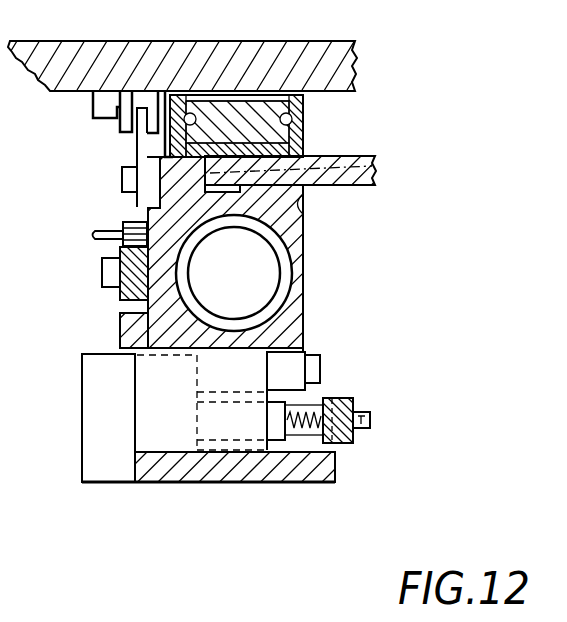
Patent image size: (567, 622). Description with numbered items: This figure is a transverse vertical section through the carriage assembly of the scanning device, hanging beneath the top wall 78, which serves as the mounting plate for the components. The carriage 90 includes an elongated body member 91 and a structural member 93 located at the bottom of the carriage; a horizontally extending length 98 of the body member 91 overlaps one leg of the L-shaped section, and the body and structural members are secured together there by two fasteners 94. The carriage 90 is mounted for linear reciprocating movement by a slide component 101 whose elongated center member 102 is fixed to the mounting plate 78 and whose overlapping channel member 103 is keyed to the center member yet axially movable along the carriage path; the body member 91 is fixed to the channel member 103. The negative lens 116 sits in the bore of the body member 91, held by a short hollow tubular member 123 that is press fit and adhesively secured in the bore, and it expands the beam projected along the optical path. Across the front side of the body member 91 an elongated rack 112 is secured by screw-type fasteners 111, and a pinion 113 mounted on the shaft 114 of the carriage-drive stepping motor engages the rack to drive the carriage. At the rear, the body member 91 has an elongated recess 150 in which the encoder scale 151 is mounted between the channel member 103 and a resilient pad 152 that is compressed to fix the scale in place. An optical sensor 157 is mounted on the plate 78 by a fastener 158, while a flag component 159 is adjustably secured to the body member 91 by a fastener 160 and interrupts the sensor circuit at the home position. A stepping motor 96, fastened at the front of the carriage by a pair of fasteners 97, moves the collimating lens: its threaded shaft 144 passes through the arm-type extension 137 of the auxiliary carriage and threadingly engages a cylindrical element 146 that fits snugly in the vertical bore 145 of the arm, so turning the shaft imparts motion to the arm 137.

The top wall 78 is at (192, 41).
The optical sensor 157 is at (93, 101).
The fastener 158 is at (100, 120).
The flag component 159 is at (136, 155).
The fastener 160 is at (121, 180).
The elongated center member 102 is at (304, 110).
The elongated overlapping channel member 103 is at (292, 132).
The slide component 101 is at (302, 146).
The encoder scale 151 is at (364, 158).
The body member 91 is at (304, 249).
The negative lens 116 is at (292, 300).
The tubular member 123 is at (294, 273).
The elongated recess 150 is at (305, 204).
The resilient pad 152 is at (304, 224).
The horizontally extending length 98 is at (307, 352).
The pinion 113 is at (125, 222).
The shaft 114 is at (93, 237).
The screw-type fasteners 111 is at (102, 272).
The elongated rack 112 is at (120, 300).
The carriage 90 is at (120, 334).
The stepping motor 96 is at (82, 412).
The structural member 93 is at (185, 484).
The fasteners 97 is at (190, 427).
The fasteners 94 is at (321, 372).
The arm-type extension 137 is at (325, 441).
The threaded shaft 144 is at (372, 421).
The cylindrical element 146 is at (356, 406).
The vertical bore 145 is at (335, 453).